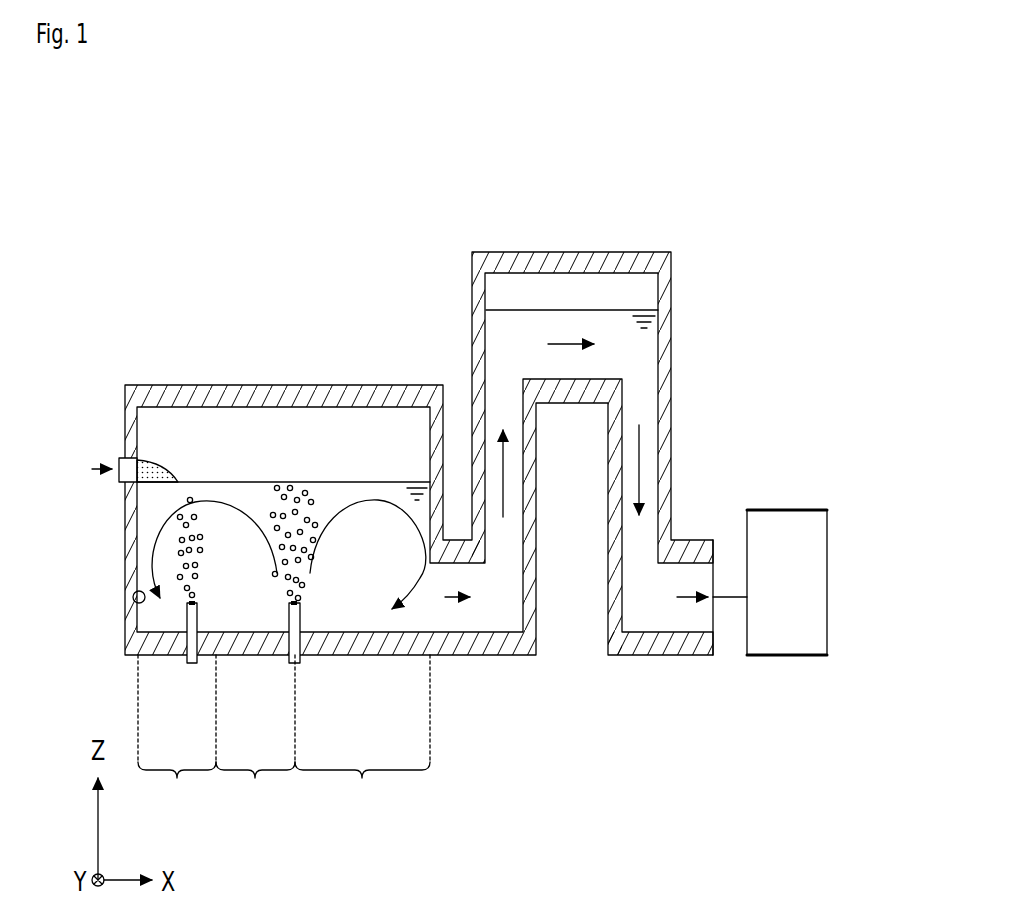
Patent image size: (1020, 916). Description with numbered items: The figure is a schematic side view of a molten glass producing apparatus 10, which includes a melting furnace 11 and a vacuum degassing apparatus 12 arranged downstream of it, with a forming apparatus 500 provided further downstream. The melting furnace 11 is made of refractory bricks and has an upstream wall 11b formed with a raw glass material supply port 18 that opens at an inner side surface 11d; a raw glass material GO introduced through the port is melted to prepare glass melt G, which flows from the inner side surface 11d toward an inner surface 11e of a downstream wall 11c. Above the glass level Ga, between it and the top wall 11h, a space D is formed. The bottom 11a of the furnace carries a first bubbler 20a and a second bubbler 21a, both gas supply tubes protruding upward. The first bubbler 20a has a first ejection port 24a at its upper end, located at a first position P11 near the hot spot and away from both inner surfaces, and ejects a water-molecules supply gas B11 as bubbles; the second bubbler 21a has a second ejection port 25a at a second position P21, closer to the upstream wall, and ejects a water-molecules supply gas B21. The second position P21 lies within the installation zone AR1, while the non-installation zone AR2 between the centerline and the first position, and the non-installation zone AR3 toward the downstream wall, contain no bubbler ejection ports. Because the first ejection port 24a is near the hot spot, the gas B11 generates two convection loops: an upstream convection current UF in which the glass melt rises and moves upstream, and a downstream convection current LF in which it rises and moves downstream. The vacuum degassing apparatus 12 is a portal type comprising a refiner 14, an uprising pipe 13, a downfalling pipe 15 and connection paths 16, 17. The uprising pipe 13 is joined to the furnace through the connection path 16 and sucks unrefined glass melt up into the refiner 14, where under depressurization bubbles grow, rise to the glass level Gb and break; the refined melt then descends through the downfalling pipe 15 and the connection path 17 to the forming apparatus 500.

The molten glass producing apparatus 10 is at (673, 184).
The melting furnace 11 is at (385, 503).
The bottom 11a is at (163, 645).
The upstream wall 11b is at (130, 520).
The downstream wall 11c is at (437, 445).
The inner side surface 11d is at (134, 599).
The inner surface 11e is at (427, 525).
The top wall 11h is at (282, 398).
The vacuum degassing apparatus 12 is at (599, 366).
The uprising pipe 13 is at (538, 530).
The refiner 14 is at (500, 258).
The downfalling pipe 15 is at (672, 393).
The connection path 16 is at (460, 648).
The connection path 17 is at (694, 648).
The raw glass material supply port 18 is at (122, 458).
The first bubbler 20a is at (298, 648).
The second bubbler 21a is at (192, 664).
The first ejection port 24a is at (297, 601).
The second ejection port 25a is at (193, 601).
The forming apparatus 500 is at (787, 512).
The water-molecules supply gas B11 is at (318, 508).
The water-molecules supply gas B21 is at (208, 570).
The space D is at (275, 461).
The glass melt G is at (358, 486).
The raw glass material GO is at (157, 472).
The glass level Ga is at (378, 479).
The glass level Gb is at (617, 310).
The upstream convection current UF is at (152, 556).
The downstream convection current LF is at (402, 612).
The first position P11 is at (292, 648).
The second position P21 is at (189, 648).
The installation zone AR1 is at (177, 789).
The non-installation zone AR2 is at (255, 789).
The non-installation zone AR3 is at (362, 789).